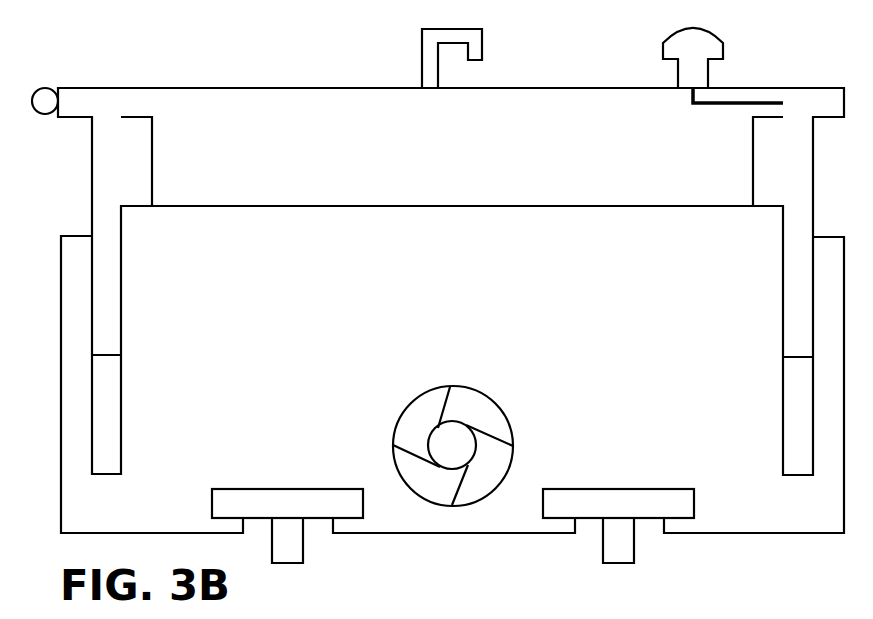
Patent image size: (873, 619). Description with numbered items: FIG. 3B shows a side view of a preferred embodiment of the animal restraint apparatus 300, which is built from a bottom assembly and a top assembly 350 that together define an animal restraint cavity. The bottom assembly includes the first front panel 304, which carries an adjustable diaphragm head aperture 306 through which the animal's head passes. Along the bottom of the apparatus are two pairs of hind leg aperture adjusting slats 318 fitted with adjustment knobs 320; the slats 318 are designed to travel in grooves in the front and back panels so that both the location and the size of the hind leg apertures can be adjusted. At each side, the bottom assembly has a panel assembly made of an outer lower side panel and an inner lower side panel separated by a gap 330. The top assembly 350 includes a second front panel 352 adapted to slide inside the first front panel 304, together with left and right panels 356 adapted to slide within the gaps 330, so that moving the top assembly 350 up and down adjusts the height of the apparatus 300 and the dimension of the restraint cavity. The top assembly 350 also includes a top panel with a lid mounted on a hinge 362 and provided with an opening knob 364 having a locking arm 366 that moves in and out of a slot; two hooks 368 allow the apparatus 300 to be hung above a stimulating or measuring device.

The animal restraint apparatus 300 is at (272, 60).
The first front panel 304 is at (468, 283).
The adjustable diaphragm head aperture 306 is at (480, 415).
The hind leg aperture adjusting slats 318 is at (287, 503).
The adjustment knobs 320 is at (287, 542).
The gap 330 is at (799, 430).
The top assembly 350 is at (364, 60).
The second front panel 352 is at (453, 150).
The left and right panels 356 is at (107, 295).
The hinge 362 is at (45, 75).
The opening knob 364 is at (708, 38).
The locking arm 366 is at (723, 106).
The hooks 368 is at (477, 40).